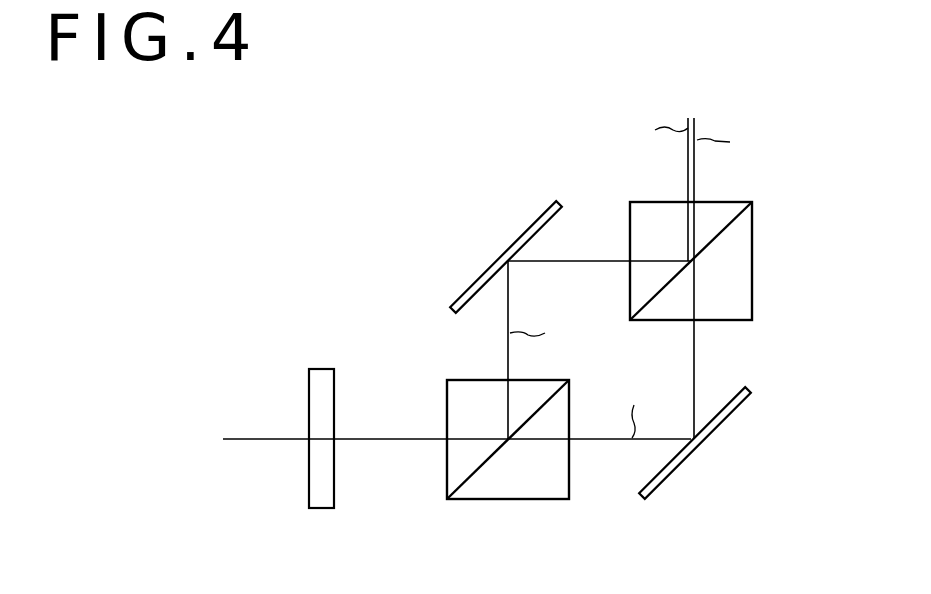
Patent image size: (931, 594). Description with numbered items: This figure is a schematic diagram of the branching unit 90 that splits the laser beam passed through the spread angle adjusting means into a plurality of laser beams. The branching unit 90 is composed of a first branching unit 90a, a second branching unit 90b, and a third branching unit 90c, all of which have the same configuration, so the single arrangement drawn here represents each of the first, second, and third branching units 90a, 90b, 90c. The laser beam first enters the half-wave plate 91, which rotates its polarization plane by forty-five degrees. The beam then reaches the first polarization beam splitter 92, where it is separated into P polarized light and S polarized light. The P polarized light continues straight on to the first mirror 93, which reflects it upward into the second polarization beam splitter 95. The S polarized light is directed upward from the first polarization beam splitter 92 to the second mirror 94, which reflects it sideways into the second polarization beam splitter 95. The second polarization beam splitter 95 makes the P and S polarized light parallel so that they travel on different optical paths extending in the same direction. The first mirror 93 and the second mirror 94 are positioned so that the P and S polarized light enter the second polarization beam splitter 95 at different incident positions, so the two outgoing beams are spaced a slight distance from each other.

The branching unit 90 is at (600, 108).
The first branching unit 90a is at (482, 178).
The second branching unit 90b is at (520, 344).
The third branching unit 90c is at (520, 344).
The half-wave plate 91 is at (321, 368).
The first polarization beam splitter 92 is at (546, 499).
The first mirror 93 is at (737, 410).
The second mirror 94 is at (468, 288).
The second polarization beam splitter 95 is at (722, 321).